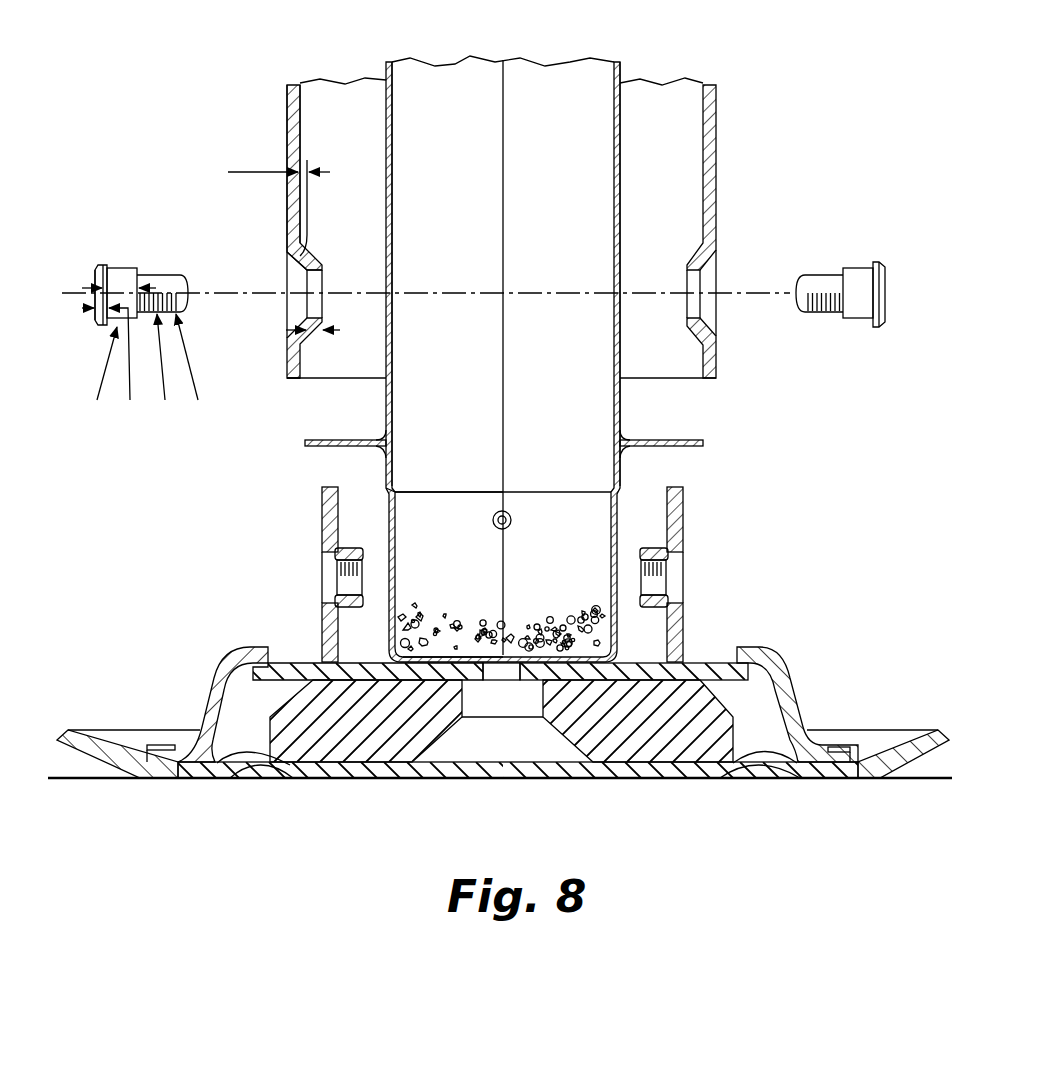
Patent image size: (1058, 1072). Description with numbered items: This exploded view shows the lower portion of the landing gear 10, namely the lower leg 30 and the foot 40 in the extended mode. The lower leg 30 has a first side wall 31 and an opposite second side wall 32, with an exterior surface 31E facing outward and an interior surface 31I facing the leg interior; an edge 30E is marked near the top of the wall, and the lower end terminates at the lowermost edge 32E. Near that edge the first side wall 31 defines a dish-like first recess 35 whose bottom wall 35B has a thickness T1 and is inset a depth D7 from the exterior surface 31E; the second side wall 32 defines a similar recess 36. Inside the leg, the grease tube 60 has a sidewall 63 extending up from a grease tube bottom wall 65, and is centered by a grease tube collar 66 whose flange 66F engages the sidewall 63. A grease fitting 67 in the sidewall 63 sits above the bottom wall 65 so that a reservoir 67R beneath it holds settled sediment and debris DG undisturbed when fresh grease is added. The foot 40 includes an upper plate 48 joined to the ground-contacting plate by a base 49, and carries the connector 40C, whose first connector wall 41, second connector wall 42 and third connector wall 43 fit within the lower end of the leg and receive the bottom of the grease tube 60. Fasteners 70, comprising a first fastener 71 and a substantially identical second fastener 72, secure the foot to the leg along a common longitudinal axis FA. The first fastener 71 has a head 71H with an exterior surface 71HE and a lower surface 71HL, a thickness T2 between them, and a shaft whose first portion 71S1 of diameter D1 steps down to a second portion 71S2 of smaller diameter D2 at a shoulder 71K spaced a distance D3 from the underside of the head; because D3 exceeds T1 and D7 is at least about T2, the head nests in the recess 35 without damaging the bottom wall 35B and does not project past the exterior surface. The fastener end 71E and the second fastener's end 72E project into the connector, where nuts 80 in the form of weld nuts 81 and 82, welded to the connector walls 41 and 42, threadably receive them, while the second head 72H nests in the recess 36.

The landing gear 10 is at (212, 96).
The lower leg 30 is at (296, 78).
The first side wall 31 is at (288, 100).
The first exterior surface 31E is at (287, 147).
The interior surface 31I is at (370, 210).
The housing edge 30E is at (304, 130).
The second side wall 32 is at (717, 104).
The lowermost edge 32E is at (296, 379).
The first recess 35 is at (300, 328).
The first recess bottom wall 35B is at (319, 262).
The second recess 36 is at (705, 316).
The recess depth D7 is at (266, 170).
The bottom wall thickness T1 is at (327, 330).
The foot 40 is at (190, 712).
The foot connector base 40C is at (390, 446).
The first connector wall 41 is at (345, 518).
The second connector wall 42 is at (661, 512).
The third connector wall 43 is at (634, 498).
The upper plate 48 is at (420, 682).
The base 49 is at (360, 778).
The grease tube 60 is at (623, 97).
The grease tube sidewall 63 is at (621, 148).
The grease tube bottom wall 65 is at (541, 660).
The grease tube collar 66 is at (372, 438).
The flange 66F is at (393, 178).
The grease fitting 67 is at (506, 512).
The cup interior region 67R is at (590, 524).
The fasteners 70 is at (154, 320).
The first fastener 71 is at (189, 294).
The fastener head 71H is at (99, 264).
The first head exterior surface 71HE is at (95, 310).
The head lower surface 71HL is at (108, 280).
The fastener end 71E is at (185, 288).
The first shaft portion 71S1 is at (294, 265).
The second shaft portion 71S2 is at (180, 308).
The first shoulder 71K is at (335, 556).
The second fastener 72 is at (653, 547).
The second fastener end 72E is at (797, 290).
The second fastener head 72H is at (882, 262).
The nuts 80 is at (834, 277).
The first weld nut 81 is at (348, 546).
The second weld nut 82 is at (795, 301).
The longitudinal axis FA is at (490, 292).
The sediment DG is at (430, 603).
The first diameter D1 is at (119, 353).
The second diameter D2 is at (196, 366).
The shoulder distance D3 is at (167, 366).
The head thickness T2 is at (112, 363).